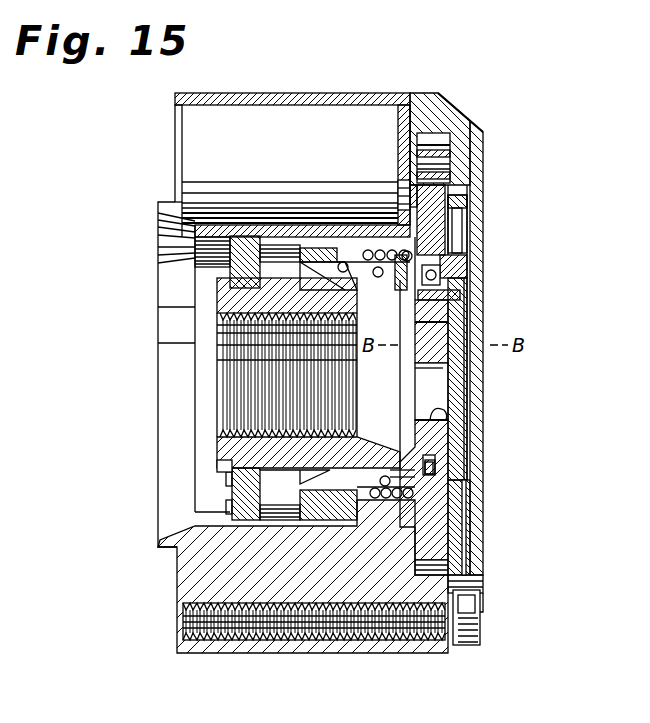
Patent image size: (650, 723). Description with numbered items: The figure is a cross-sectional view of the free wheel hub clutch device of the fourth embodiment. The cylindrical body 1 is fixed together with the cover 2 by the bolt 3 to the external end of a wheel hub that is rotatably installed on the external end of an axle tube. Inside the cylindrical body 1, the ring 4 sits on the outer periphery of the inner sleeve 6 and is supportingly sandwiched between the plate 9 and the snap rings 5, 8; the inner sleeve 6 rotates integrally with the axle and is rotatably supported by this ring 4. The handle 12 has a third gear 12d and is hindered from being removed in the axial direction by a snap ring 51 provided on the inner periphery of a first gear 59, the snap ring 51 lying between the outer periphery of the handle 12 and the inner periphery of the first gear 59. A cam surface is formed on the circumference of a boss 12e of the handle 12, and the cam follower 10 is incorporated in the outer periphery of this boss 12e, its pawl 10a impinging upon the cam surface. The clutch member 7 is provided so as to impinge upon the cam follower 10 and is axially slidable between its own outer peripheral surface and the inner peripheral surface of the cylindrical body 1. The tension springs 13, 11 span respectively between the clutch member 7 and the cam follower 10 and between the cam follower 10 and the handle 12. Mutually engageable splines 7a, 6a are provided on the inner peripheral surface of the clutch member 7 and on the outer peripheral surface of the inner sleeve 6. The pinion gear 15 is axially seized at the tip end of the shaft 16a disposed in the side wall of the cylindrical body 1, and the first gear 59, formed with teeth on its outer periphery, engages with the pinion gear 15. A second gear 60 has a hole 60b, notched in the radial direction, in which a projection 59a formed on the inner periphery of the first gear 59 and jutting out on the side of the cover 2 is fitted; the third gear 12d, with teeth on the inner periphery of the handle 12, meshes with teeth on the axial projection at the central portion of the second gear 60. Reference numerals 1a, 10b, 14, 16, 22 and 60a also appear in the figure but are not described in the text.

The cylindrical body 1 is at (380, 234).
The housing bottom wall 1a is at (272, 517).
The cover 2 is at (441, 94).
The bolt 3 is at (318, 527).
The ring 4 is at (200, 251).
The snap ring 5 is at (197, 238).
The inner sleeve 6 is at (217, 468).
The spline 6a is at (280, 268).
The clutch member 7 is at (330, 270).
The spline 7a is at (352, 265).
The snap ring 8 is at (230, 270).
The plate 9 is at (270, 250).
The cam follower 10 is at (478, 122).
The pawl 10a is at (273, 328).
The hub sleeve 10b is at (402, 500).
The tension spring 11 is at (268, 320).
The handle 12 is at (414, 292).
The third gear 12d is at (447, 425).
The boss 12e is at (487, 577).
The tension spring 13 is at (450, 260).
The nut 14 is at (472, 645).
The pinion gear 15 is at (484, 132).
The bore 16 is at (192, 137).
The shaft 16a is at (434, 140).
The bearing 22 is at (437, 458).
The snap ring 51 is at (449, 478).
The first gear 59 is at (437, 228).
The projection 59a is at (432, 283).
The second gear 60 is at (429, 418).
The sleeve 60a is at (427, 355).
The hole 60b is at (456, 240).